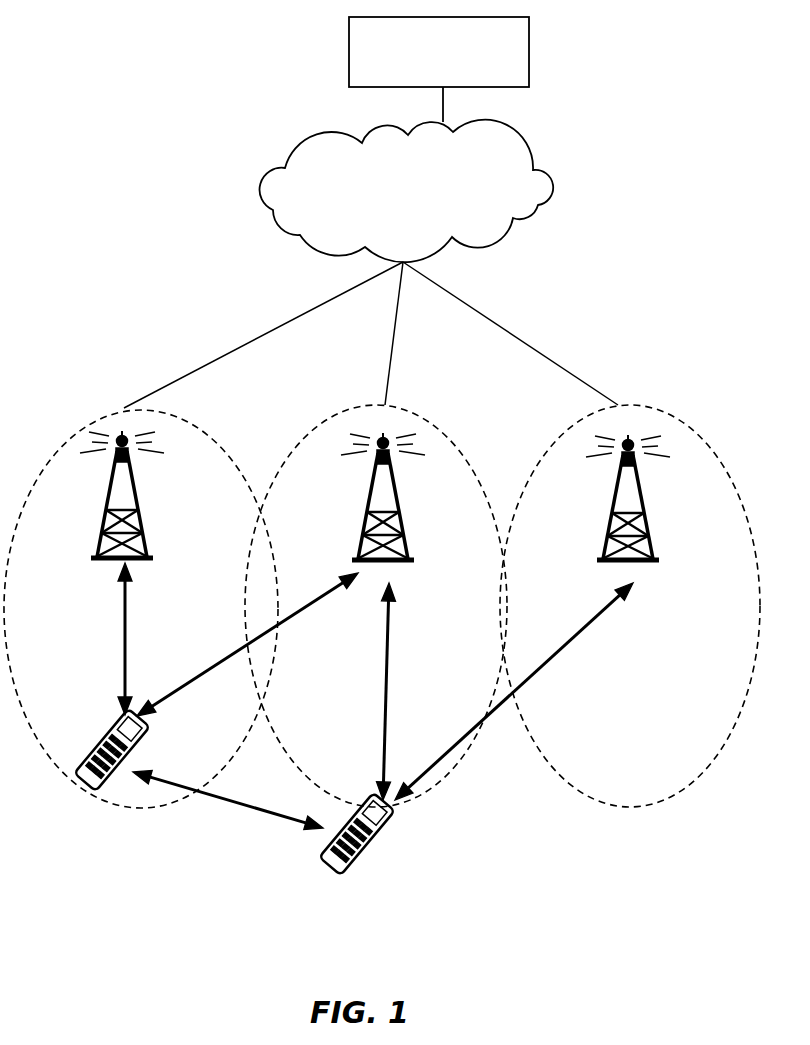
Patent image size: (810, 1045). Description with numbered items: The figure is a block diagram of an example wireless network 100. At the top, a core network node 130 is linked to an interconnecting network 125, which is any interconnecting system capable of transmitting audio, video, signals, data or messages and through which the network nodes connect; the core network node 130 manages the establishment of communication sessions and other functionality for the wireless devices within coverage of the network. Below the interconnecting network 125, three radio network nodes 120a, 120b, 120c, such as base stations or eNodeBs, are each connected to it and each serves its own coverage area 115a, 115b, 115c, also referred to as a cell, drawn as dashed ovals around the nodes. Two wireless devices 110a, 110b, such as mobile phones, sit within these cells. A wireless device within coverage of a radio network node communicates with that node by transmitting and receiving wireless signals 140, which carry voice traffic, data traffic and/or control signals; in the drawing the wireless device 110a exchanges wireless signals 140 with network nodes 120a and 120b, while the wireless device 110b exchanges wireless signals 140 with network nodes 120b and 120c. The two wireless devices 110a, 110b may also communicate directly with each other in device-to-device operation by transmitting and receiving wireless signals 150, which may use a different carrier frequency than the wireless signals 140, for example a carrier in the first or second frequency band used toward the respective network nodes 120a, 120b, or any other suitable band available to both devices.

The wireless network 100 is at (166, 148).
The wireless device 110a is at (88, 757).
The wireless device 110b is at (380, 840).
The coverage area 115a is at (141, 609).
The coverage area 115b is at (376, 606).
The coverage area 115c is at (630, 606).
The network node 120a is at (110, 517).
The network node 120b is at (370, 521).
The network node 120c is at (614, 533).
The interconnecting network 125 is at (371, 264).
The core network node 130 is at (439, 69).
The wireless signals 140 is at (355, 681).
The wireless signals 150 is at (228, 802).